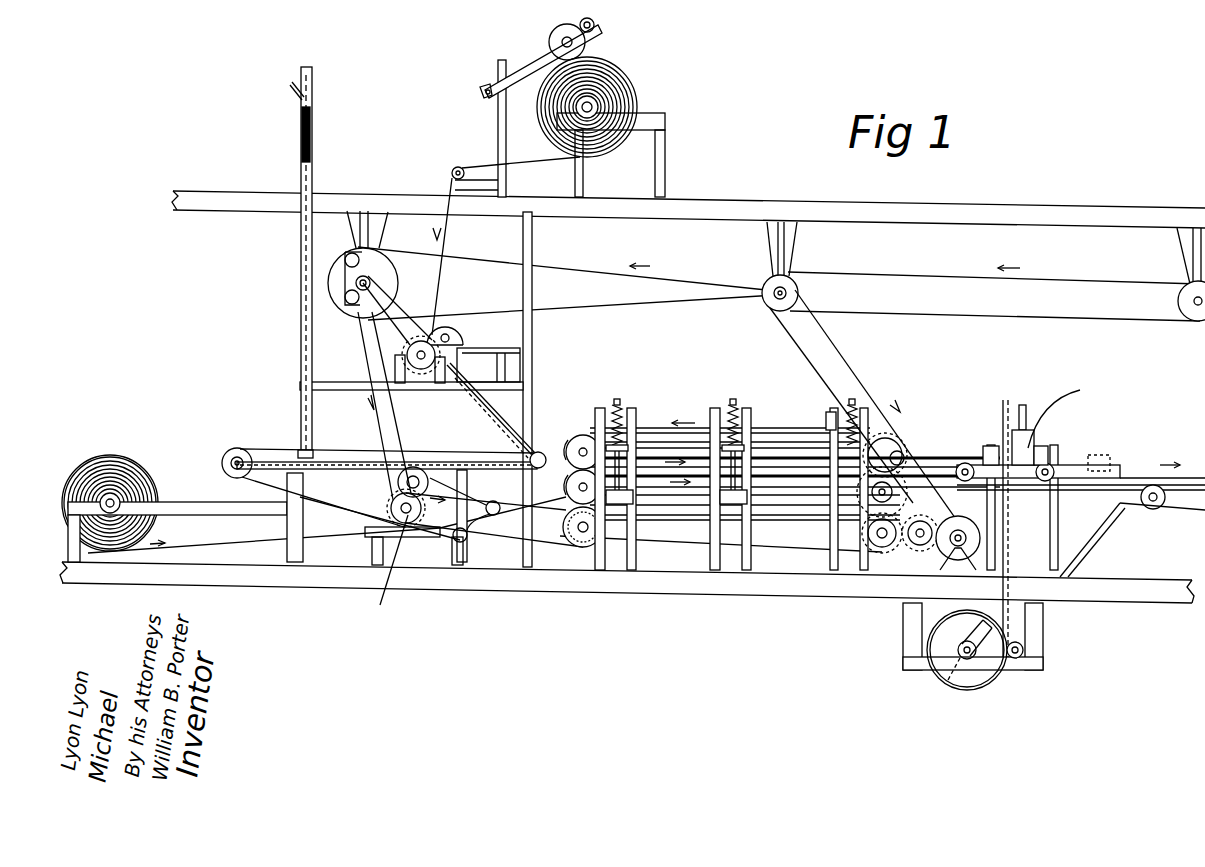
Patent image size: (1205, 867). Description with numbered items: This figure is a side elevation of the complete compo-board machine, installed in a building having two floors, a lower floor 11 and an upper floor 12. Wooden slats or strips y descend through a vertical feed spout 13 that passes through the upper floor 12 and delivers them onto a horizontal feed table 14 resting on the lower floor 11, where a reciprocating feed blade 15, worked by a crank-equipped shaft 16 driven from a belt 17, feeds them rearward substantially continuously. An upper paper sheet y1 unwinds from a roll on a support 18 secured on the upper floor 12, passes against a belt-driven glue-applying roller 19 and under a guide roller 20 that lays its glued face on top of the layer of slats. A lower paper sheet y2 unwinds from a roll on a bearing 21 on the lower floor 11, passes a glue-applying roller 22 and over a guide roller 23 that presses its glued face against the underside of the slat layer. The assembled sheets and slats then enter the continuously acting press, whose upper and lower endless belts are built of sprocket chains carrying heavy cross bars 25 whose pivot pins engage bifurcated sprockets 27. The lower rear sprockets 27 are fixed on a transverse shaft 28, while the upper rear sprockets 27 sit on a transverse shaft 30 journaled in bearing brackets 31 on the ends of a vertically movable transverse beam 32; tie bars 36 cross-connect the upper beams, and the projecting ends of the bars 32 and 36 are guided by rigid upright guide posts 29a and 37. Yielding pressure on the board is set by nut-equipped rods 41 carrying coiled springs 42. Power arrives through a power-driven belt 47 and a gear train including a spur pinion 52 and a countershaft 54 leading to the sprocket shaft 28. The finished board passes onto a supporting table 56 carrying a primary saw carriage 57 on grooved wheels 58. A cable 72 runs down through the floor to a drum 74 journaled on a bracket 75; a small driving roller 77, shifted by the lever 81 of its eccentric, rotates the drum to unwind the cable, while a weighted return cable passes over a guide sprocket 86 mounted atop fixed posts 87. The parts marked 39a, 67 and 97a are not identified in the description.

The lower floor 11 is at (306, 583).
The upper floor 12 is at (237, 212).
The feed spout 13 is at (312, 142).
The horizontal feed table 14 is at (318, 465).
The reciprocating feed blade 15 is at (297, 455).
The crank-equipped shaft 16 is at (235, 450).
The belt 17 is at (407, 527).
The support 18 is at (665, 138).
The glue-applying roller 19 is at (421, 370).
The guide roller 20 is at (541, 451).
The bearing 21 is at (200, 503).
The glue-applying roller 22 is at (394, 567).
The guide roller 23 is at (420, 480).
The cross bars 25 is at (658, 435).
The sprockets 27 is at (570, 450).
The transverse shaft 28 is at (890, 483).
The upright guide posts 29a is at (815, 414).
The transverse shaft 30 is at (902, 452).
The bearing brackets 31 is at (876, 450).
The transverse beam 32 is at (828, 460).
The tie bars 36 is at (712, 467).
The upright guide posts 37 is at (599, 407).
The pressure block 39a is at (634, 495).
The nut-equipped rods 41 is at (622, 468).
The coiled springs 42 is at (622, 410).
The power-driven belt 47 is at (870, 388).
The spur pinion 52 is at (918, 546).
The countershaft 54 is at (878, 548).
The supporting table 56 is at (1106, 500).
The main carriage 57 is at (1042, 458).
The grooved wheels 58 is at (966, 462).
The lever 67 is at (1068, 413).
The cable 72 is at (975, 638).
The drum 74 is at (965, 680).
The bracket 75 is at (904, 640).
The driving roller 77 is at (1023, 648).
The lever 81 is at (1012, 570).
The guide sprocket 86 is at (1030, 430).
The fixed posts 87 is at (996, 540).
The pulley 97a is at (962, 530).
The slats y is at (306, 134).
The upper paper sheet y1 is at (490, 410).
The lower paper sheet y2 is at (314, 504).